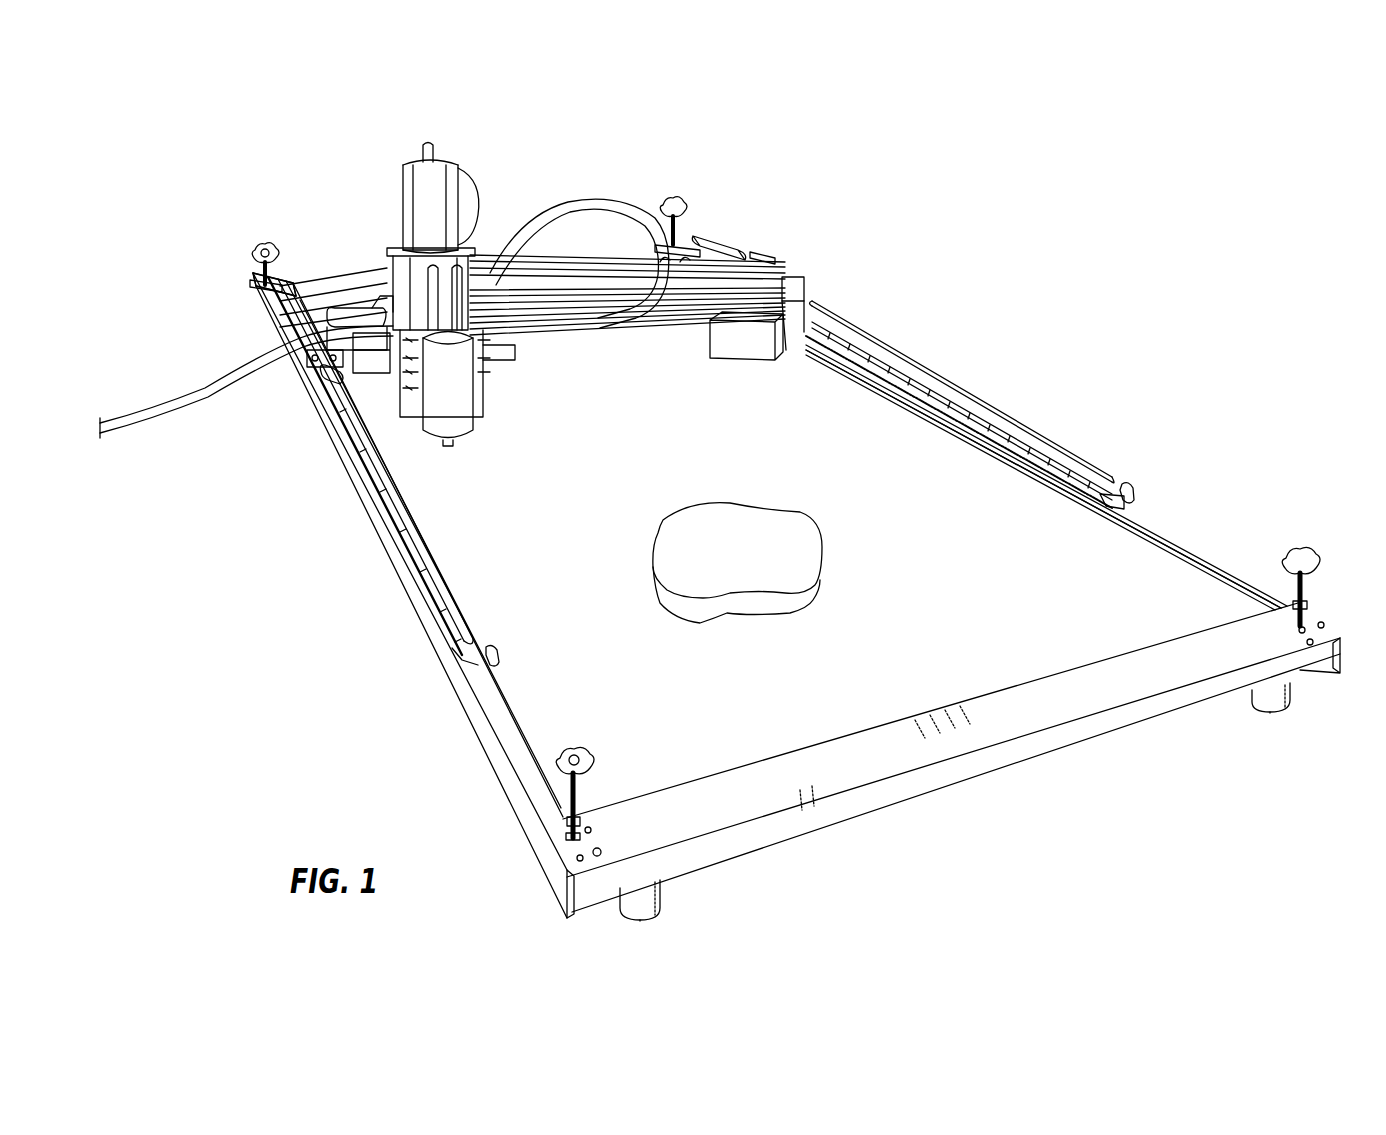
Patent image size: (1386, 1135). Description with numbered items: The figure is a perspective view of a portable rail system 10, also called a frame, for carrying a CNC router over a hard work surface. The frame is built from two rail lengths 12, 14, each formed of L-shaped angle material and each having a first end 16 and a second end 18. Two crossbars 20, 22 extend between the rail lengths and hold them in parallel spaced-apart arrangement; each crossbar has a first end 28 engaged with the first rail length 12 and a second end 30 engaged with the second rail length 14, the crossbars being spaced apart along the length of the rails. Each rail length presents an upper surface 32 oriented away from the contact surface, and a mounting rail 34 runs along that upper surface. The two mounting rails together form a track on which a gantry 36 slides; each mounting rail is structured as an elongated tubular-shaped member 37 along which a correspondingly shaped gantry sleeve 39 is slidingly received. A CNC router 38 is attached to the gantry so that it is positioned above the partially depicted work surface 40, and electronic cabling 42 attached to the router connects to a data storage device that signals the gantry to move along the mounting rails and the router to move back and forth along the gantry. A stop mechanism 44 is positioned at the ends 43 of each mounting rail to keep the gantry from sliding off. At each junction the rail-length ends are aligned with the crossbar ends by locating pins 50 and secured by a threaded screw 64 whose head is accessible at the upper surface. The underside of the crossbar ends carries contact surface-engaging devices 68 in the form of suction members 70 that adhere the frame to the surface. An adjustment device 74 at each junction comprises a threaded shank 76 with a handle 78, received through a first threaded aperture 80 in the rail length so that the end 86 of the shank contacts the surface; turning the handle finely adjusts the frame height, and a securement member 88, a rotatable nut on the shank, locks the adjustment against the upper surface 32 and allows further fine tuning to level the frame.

The portable rail system 10 is at (275, 590).
The first rail length 12 is at (452, 630).
The second rail length 14 is at (1022, 448).
The first end of rail length 16 is at (255, 283).
The second end of rail length 18 is at (562, 876).
The first crossbar 20 is at (331, 287).
The second crossbar 22 is at (893, 758).
The first end of crossbar 28 is at (281, 280).
The second end of crossbar 30 is at (650, 250).
The upper surface 32 is at (520, 735).
The mounting rail 34 is at (434, 554).
The gantry 36 is at (610, 317).
The elongated tubular-shaped member 37 is at (405, 497).
The CNC router 38 is at (462, 408).
The gantry sleeve 39 is at (310, 385).
The work surface 40 is at (750, 569).
The electronic cabling 42 is at (160, 410).
The end of mounting rail 43 is at (463, 672).
The stop mechanism 44 is at (498, 655).
The locating pin 50 is at (592, 826).
The threaded screw 64 is at (608, 846).
The contact surface-engaging device 68 is at (660, 930).
The suction member 70 is at (738, 256).
The adjustment device 74 is at (255, 243).
The threaded shank 76 is at (258, 268).
The handle 78 is at (266, 235).
The first threaded aperture 80 is at (563, 838).
The end of threaded shank 86 is at (770, 260).
The securement member 88 is at (563, 817).